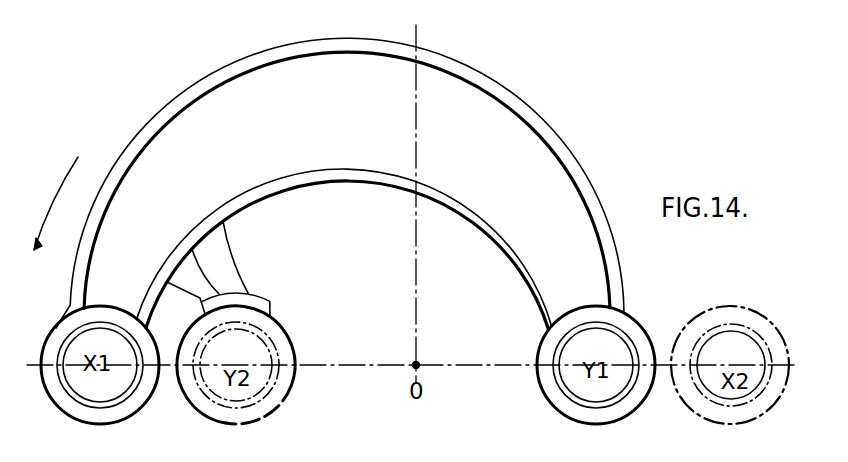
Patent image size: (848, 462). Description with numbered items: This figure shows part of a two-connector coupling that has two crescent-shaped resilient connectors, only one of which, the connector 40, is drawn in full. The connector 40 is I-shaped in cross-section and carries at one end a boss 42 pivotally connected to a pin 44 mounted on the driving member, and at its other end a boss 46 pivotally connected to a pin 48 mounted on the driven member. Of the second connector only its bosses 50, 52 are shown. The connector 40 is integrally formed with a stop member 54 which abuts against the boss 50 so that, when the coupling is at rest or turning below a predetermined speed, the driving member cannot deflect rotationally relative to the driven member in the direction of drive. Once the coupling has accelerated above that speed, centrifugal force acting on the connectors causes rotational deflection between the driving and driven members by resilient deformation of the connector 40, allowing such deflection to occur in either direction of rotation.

The connector 40 is at (519, 155).
The boss 42 is at (137, 404).
The pin 44 is at (81, 338).
The boss 46 is at (620, 326).
The pin 48 is at (620, 354).
The boss 50 is at (278, 399).
The boss 52 is at (697, 403).
The stop member 54 is at (215, 258).